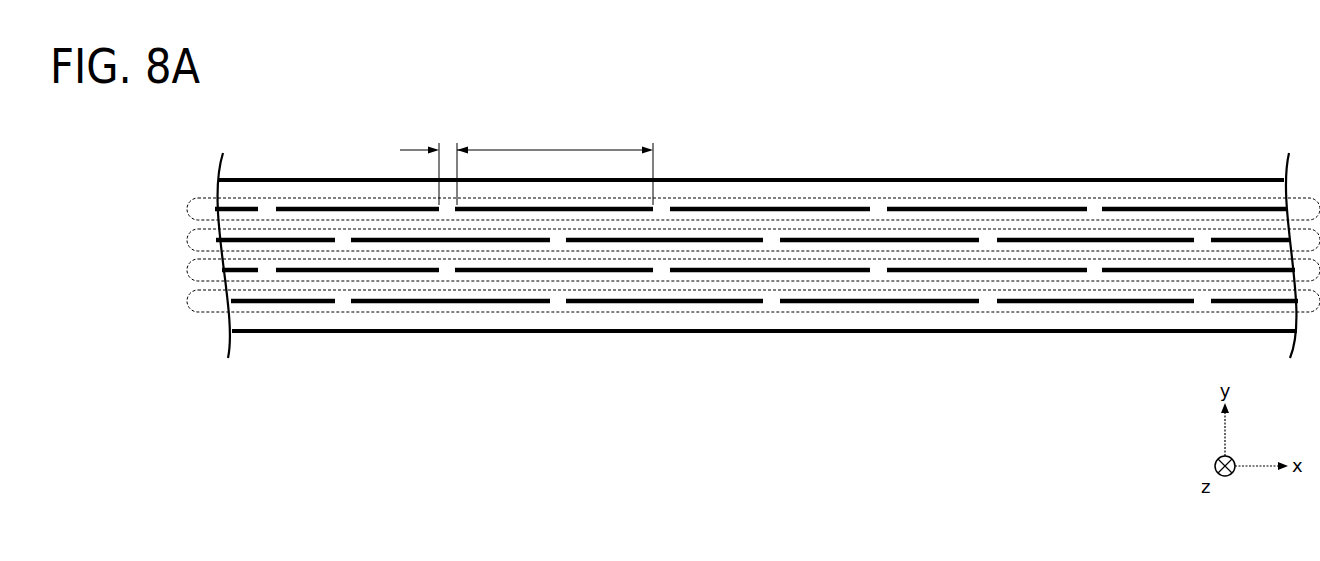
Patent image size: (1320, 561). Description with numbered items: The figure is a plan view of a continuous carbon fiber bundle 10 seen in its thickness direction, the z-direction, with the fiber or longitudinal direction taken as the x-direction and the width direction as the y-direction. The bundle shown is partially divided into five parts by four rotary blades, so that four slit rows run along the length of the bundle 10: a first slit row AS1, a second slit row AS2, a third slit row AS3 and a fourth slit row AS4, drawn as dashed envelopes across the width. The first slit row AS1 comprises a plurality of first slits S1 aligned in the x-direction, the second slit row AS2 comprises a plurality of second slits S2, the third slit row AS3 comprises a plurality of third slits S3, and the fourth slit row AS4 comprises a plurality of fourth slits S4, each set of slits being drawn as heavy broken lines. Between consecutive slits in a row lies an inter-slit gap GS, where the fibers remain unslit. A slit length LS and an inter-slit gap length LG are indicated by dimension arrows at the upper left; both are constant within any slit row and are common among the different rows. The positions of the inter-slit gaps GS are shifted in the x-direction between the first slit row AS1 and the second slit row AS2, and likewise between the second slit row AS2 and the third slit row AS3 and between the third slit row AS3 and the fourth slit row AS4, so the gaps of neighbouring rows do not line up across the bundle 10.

The continuous carbon fiber bundle 10 is at (781, 170).
The first slits S1 is at (988, 212).
The second slits S2 is at (520, 243).
The third slits S3 is at (810, 273).
The fourth slits S4 is at (1096, 304).
The inter-slit gap GS is at (880, 213).
The inter-slit gap length LG is at (434, 161).
The slit length LS is at (559, 161).
The first slit row AS1 is at (187, 209).
The second slit row AS2 is at (187, 240).
The third slit row AS3 is at (187, 270).
The fourth slit row AS4 is at (187, 301).